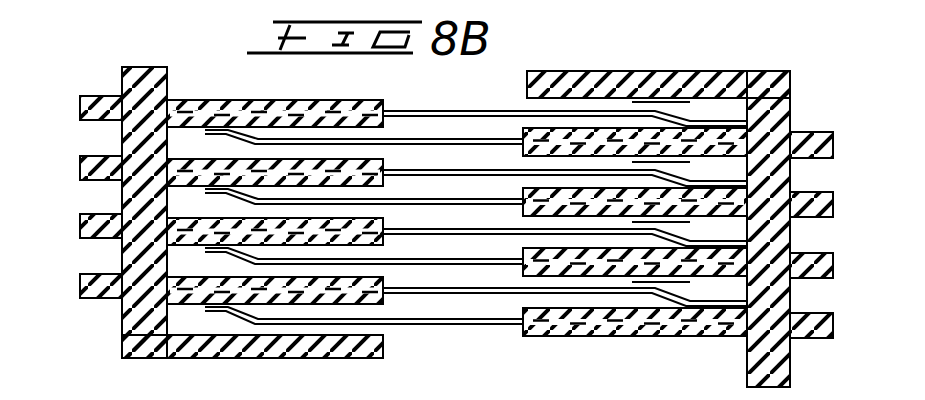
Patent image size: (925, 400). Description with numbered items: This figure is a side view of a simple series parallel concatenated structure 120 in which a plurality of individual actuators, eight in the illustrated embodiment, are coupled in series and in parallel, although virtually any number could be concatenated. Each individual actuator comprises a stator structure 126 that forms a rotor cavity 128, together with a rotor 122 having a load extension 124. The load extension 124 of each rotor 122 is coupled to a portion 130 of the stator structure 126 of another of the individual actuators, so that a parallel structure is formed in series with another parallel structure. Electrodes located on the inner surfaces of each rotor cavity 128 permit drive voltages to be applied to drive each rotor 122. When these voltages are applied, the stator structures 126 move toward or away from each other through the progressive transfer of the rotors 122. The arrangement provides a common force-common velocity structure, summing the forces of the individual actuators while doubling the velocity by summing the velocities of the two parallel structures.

The series parallel concatenated structure 120 is at (457, 199).
The rotor 122 is at (672, 103).
The load extension 124 is at (417, 107).
The stator structure 126 is at (622, 64).
The rotor cavity 128 is at (523, 103).
The portion of the stator structure 130 is at (293, 189).